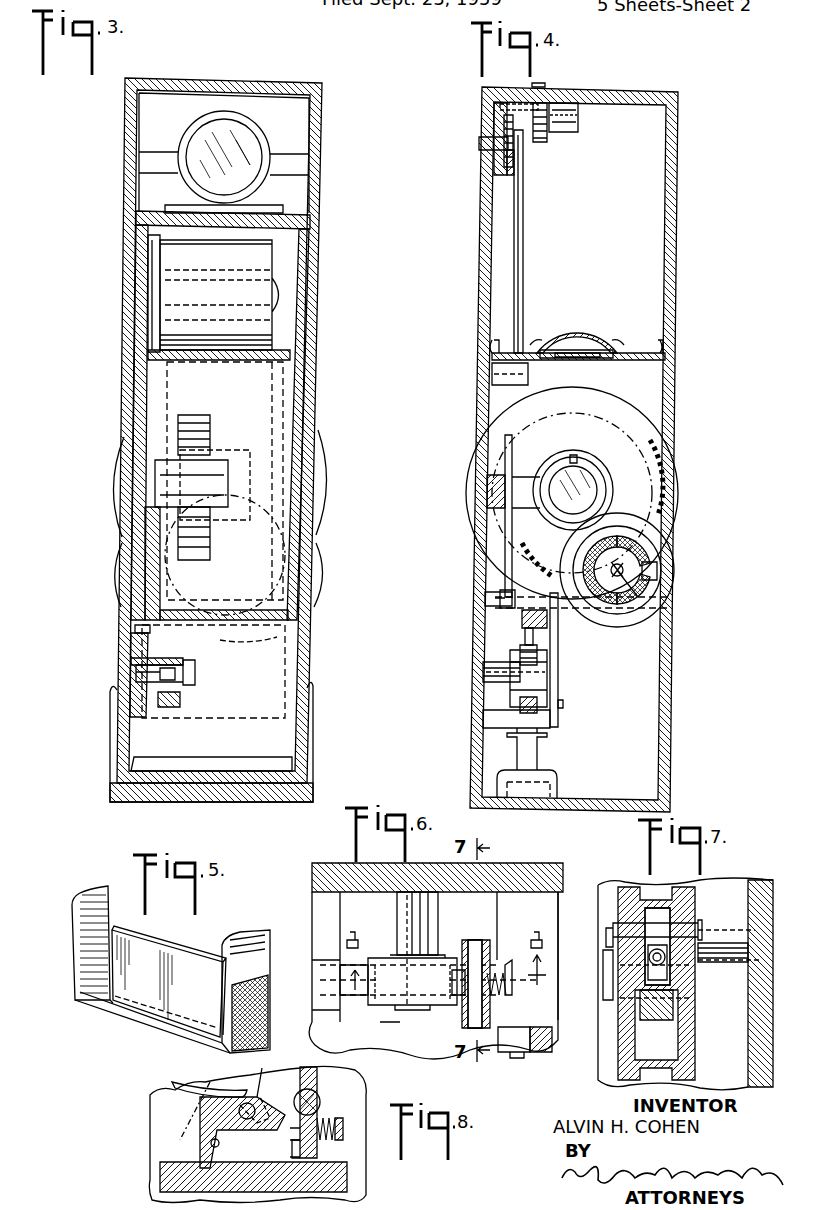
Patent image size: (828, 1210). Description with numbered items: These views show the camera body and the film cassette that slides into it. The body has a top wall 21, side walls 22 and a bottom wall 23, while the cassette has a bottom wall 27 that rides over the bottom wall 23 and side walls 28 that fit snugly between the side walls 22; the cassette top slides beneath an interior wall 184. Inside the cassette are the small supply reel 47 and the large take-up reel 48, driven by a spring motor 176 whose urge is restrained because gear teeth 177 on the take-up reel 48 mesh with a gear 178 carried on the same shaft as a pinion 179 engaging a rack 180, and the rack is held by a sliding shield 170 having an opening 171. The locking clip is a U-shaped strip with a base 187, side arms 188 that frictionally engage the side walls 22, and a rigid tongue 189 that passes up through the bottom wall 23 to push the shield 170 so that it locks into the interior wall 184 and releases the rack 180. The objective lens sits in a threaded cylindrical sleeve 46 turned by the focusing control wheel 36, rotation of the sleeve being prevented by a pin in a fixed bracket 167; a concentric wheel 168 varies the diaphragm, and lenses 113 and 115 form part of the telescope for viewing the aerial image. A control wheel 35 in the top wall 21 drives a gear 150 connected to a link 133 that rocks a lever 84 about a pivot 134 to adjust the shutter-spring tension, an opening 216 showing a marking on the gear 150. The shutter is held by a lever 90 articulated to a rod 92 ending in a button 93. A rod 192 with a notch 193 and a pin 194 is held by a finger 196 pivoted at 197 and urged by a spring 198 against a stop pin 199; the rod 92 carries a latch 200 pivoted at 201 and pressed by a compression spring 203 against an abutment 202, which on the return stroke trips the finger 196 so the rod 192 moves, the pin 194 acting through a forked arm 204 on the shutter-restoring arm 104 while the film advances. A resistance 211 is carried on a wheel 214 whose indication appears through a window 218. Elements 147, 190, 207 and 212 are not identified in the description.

In FIG. 3, the top wall 21 is at (243, 78).
In FIG. 4, the top wall 21 is at (613, 88).
In FIG. 3, the side walls 22 is at (123, 466).
In FIG. 4, the side walls 22 is at (678, 253).
In FIG. 6, the side walls 22 is at (536, 870).
In FIG. 7, the side walls 22 is at (760, 1075).
In FIG. 3, the bottom wall 23 is at (170, 802).
In FIG. 4, the bottom wall 23 is at (640, 799).
In FIG. 3, the bottom wall 27 is at (280, 766).
In FIG. 3, the side walls 28 is at (302, 386).
In FIG. 4, the control wheel 35 is at (547, 84).
In FIG. 3, the control wheel 36 is at (326, 500).
In FIG. 4, the control wheel 36 is at (680, 491).
In FIG. 4, the cylindrical sleeve 46 is at (591, 479).
In FIG. 3, the supply reel 47 is at (265, 258).
In FIG. 3, the take-up reel 48 is at (246, 370).
In FIG. 4, the lever 84 is at (527, 370).
In FIG. 4, the lever 90 is at (548, 631).
In FIG. 4, the rod 92 is at (538, 760).
In FIG. 7, the rod 92 is at (690, 1069).
In FIG. 4, the button 93 is at (520, 810).
In FIG. 4, the shutter-restoring arm 104 is at (505, 440).
In FIG. 4, the lens 113 is at (586, 340).
In FIG. 3, the lens 115 is at (240, 152).
In FIG. 4, the link 133 is at (521, 282).
In FIG. 4, the pivot 134 is at (492, 373).
In FIG. 4, the lens mount 147 is at (586, 360).
In FIG. 4, the gear 150 is at (505, 165).
In FIG. 4, the fixed bracket 167 is at (519, 470).
In FIG. 4, the control wheel 168 is at (522, 426).
In FIG. 3, the sliding shield 170 is at (262, 210).
In FIG. 3, the opening 171 is at (225, 555).
In FIG. 3, the spring motor 176 is at (196, 414).
In FIG. 3, the gear teeth 177 is at (148, 340).
In FIG. 3, the gear 178 is at (131, 650).
In FIG. 3, the pinion 179 is at (172, 660).
In FIG. 3, the rack 180 is at (183, 700).
In FIG. 3, the interior wall 184 is at (296, 213).
In FIG. 5, the base 187 is at (125, 1030).
In FIG. 3, the side arms 188 is at (312, 758).
In FIG. 5, the side arms 188 is at (255, 937).
In FIG. 5, the rigid tongue 189 is at (182, 960).
In FIG. 4, the rod foot 190 is at (486, 594).
In FIG. 4, the rod 192 is at (521, 705).
In FIG. 6, the rod 192 is at (364, 996).
In FIG. 7, the rod 192 is at (640, 1000).
In FIG. 8, the rod 192 is at (167, 1165).
In FIG. 8, the notch 193 is at (235, 1165).
In FIG. 4, the pin 194 is at (560, 705).
In FIG. 6, the pin 194 is at (531, 1049).
In FIG. 4, the finger 196 is at (520, 690).
In FIG. 6, the finger 196 is at (385, 996).
In FIG. 7, the finger 196 is at (698, 1002).
In FIG. 8, the finger 196 is at (205, 1147).
In FIG. 4, the pivot 197 is at (496, 672).
In FIG. 6, the pivot 197 is at (426, 915).
In FIG. 7, the pivot 197 is at (724, 925).
In FIG. 8, the pivot 197 is at (250, 1095).
In FIG. 4, the spring 198 is at (520, 654).
In FIG. 8, the spring 198 is at (185, 1082).
In FIG. 8, the stop pin 199 is at (212, 1143).
In FIG. 6, the latch 200 is at (446, 988).
In FIG. 7, the latch 200 is at (668, 966).
In FIG. 8, the latch 200 is at (292, 1126).
In FIG. 6, the pivot 201 is at (476, 942).
In FIG. 7, the pivot 201 is at (618, 930).
In FIG. 8, the pivot 201 is at (316, 1099).
In FIG. 7, the abutment 202 is at (638, 995).
In FIG. 8, the abutment 202 is at (292, 1147).
In FIG. 6, the compression spring 203 is at (496, 975).
In FIG. 7, the compression spring 203 is at (650, 957).
In FIG. 8, the compression spring 203 is at (326, 1120).
In FIG. 4, the forked arm 204 is at (559, 678).
In FIG. 6, the forked arm 204 is at (502, 1045).
In FIG. 4, the shaft 207 is at (521, 160).
In FIG. 4, the resistance 211 is at (641, 549).
In FIG. 4, the pointer 212 is at (656, 575).
In FIG. 3, the wheel 214 is at (326, 566).
In FIG. 4, the wheel 214 is at (623, 632).
In FIG. 4, the opening 216 is at (482, 130).
In FIG. 4, the window 218 is at (658, 570).